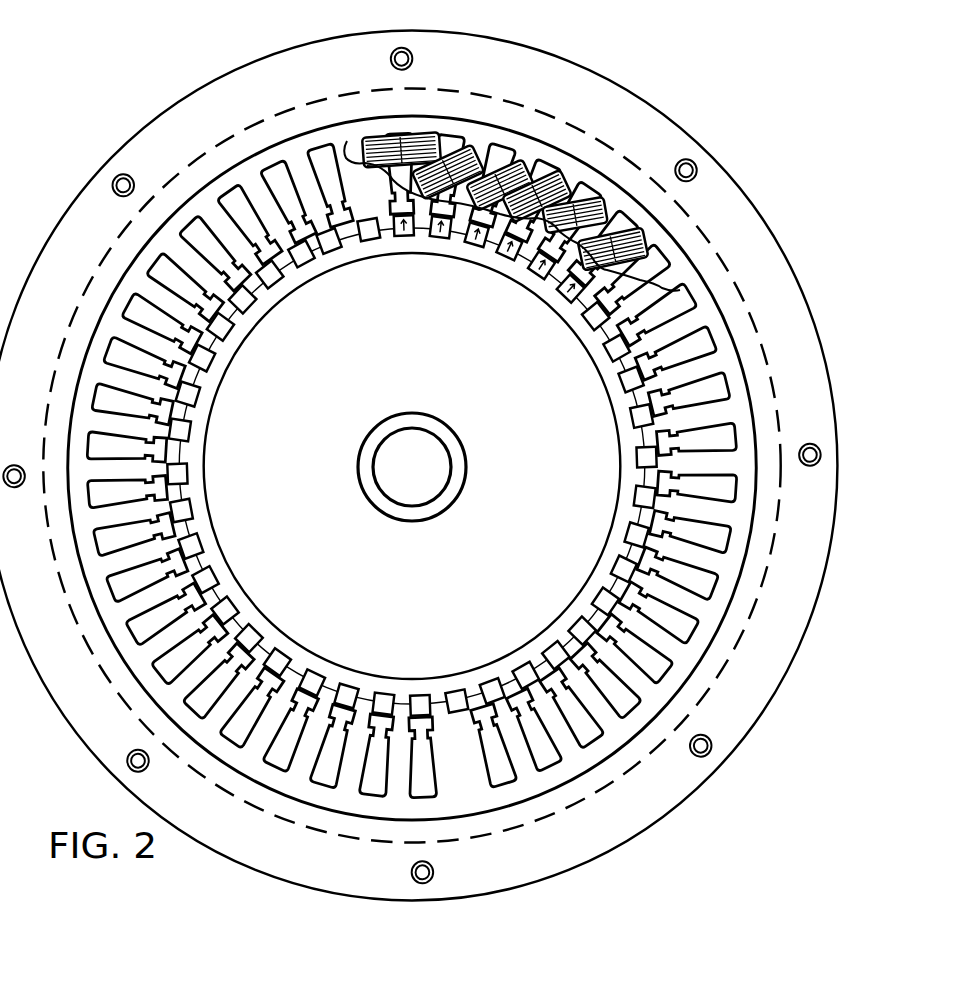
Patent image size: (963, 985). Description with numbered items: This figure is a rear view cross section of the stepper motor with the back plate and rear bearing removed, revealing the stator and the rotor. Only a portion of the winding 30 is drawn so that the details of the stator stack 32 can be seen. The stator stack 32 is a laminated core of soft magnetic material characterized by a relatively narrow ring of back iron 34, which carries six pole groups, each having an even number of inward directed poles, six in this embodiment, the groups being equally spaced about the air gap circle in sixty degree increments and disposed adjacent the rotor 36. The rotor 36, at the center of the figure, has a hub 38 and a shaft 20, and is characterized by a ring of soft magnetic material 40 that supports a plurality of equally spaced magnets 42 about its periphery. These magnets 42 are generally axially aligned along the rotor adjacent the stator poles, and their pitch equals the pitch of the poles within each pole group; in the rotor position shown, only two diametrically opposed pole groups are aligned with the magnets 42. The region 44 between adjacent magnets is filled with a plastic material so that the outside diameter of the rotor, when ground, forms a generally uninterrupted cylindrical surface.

The shaft 20 is at (442, 437).
The winding 30 is at (543, 177).
The stator stack 32 is at (321, 117).
The back iron 34 is at (254, 150).
The rotor 36 is at (237, 412).
The hub 38 is at (273, 597).
The ring of soft magnetic material 40 is at (406, 248).
The magnets 42 is at (483, 240).
The region between magnets 44 is at (560, 277).